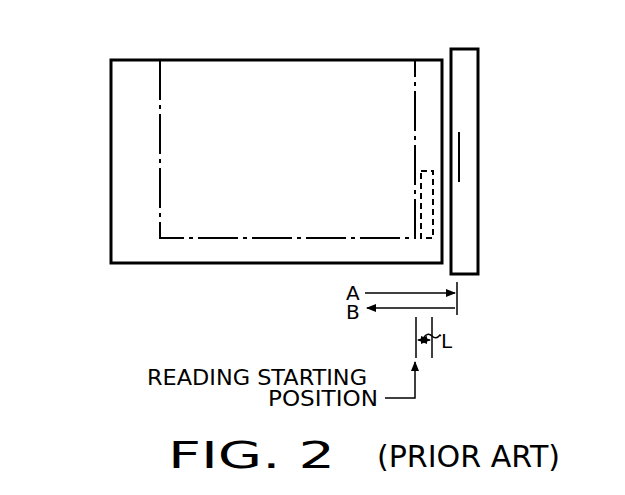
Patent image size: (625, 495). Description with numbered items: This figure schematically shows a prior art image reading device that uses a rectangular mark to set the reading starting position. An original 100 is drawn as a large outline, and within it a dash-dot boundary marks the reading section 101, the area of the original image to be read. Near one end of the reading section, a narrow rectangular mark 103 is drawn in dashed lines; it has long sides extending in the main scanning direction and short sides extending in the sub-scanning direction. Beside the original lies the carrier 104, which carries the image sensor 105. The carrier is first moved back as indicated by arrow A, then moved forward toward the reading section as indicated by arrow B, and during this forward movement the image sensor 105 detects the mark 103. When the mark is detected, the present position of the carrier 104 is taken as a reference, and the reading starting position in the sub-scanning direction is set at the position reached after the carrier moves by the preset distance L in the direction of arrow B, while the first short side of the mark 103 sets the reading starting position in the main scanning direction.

The original document / platen 100 is at (111, 208).
The reading section 101 is at (415, 58).
The mark 103 is at (433, 203).
The carrier 104 is at (470, 248).
The image sensor 105 is at (459, 155).